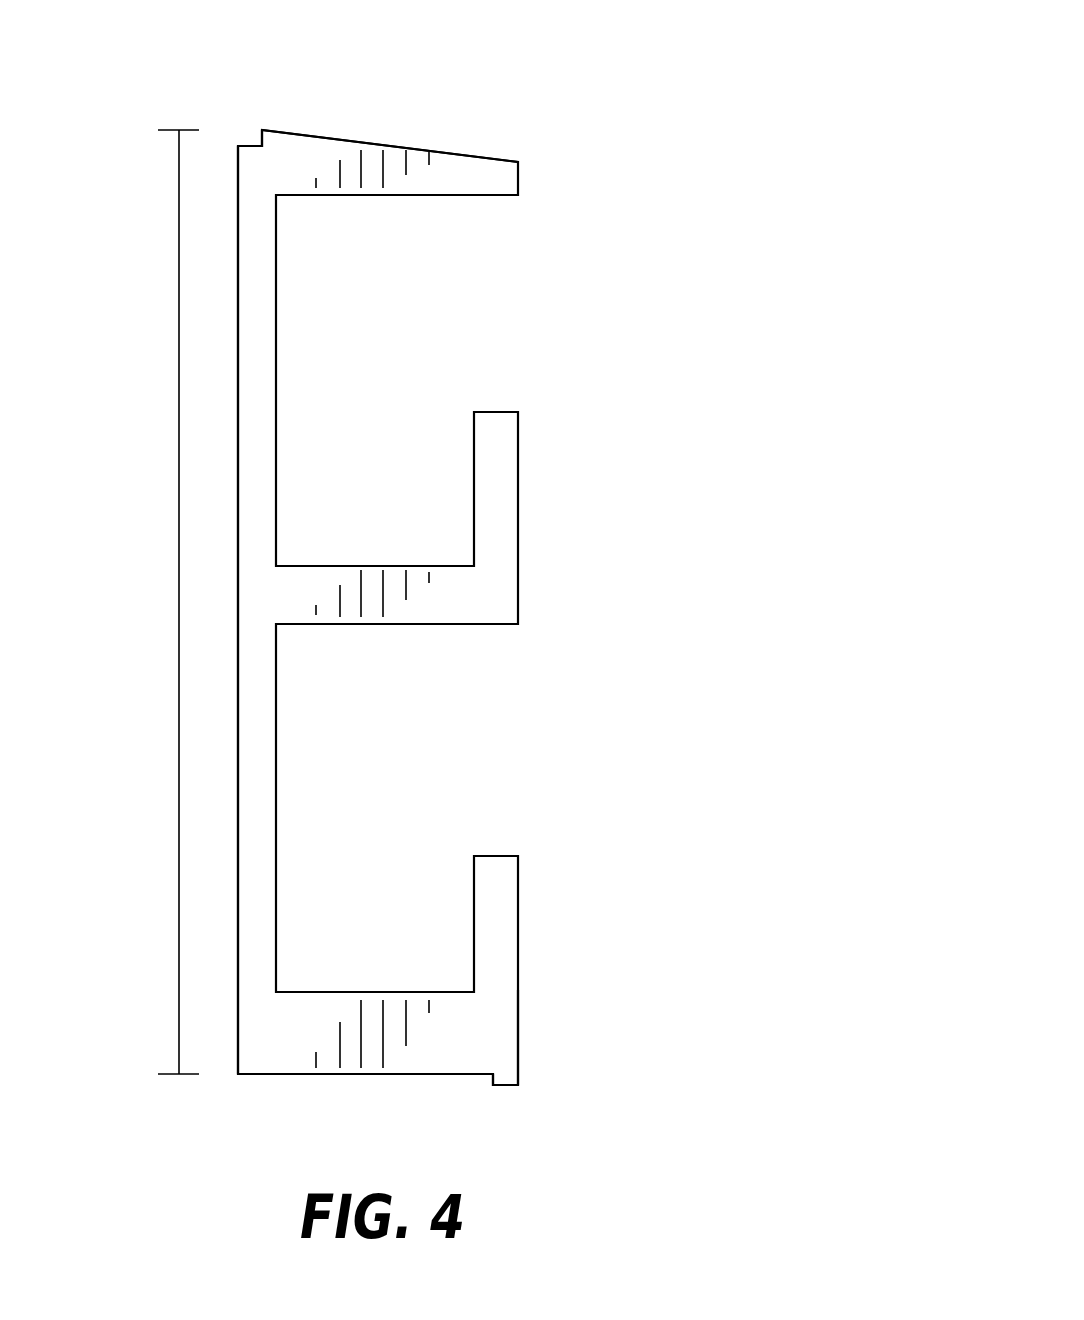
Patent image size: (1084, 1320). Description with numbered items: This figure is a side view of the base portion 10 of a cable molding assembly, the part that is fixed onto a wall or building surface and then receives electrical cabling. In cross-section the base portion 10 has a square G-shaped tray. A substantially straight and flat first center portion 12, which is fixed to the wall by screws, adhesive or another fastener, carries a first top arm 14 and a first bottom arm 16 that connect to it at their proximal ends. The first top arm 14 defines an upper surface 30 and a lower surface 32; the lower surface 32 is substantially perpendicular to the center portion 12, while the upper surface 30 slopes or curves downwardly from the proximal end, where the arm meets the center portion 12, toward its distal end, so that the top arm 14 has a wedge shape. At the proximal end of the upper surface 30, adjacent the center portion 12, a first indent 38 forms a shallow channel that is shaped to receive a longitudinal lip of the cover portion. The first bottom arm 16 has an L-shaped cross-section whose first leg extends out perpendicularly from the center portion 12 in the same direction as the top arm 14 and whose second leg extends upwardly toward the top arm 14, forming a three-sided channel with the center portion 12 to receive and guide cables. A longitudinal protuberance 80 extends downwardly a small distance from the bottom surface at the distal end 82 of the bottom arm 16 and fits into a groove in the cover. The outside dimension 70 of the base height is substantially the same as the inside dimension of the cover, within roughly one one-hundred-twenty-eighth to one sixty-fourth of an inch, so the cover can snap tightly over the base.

The base portion 10 is at (605, 502).
The first center portion 12 is at (253, 437).
The first top arm 14 is at (352, 167).
The first bottom arm 16 is at (375, 1057).
The upper surface 30 is at (388, 145).
The lower surface 32 is at (402, 197).
The first indent 38 is at (251, 144).
The outside dimension 70 is at (179, 397).
The protuberance 80 is at (508, 1078).
The distal end 82 is at (508, 1020).